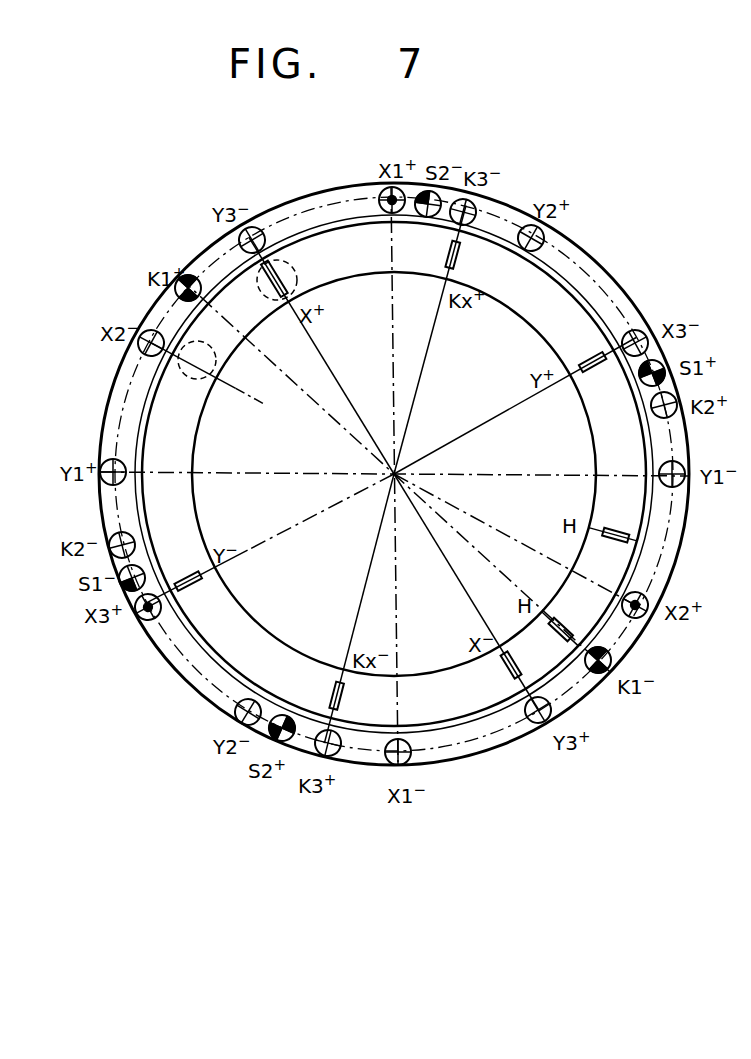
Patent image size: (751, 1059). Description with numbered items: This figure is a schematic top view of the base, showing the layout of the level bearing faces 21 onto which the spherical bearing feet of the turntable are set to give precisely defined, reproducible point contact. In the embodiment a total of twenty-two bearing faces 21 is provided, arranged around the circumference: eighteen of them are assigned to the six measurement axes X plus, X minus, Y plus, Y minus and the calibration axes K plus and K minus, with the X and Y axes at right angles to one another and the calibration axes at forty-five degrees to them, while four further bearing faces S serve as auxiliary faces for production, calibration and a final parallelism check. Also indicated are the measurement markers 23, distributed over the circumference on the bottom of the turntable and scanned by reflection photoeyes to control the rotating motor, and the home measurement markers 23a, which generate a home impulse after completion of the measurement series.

The bearing faces 21 is at (104, 452).
The measurement markers 23 is at (592, 374).
The home measurement markers 23a is at (285, 300).